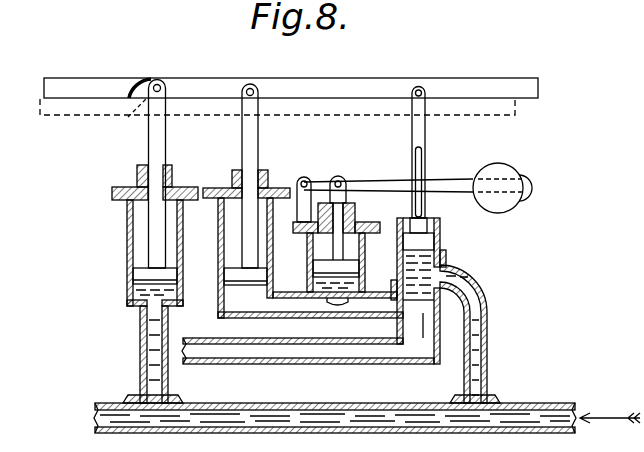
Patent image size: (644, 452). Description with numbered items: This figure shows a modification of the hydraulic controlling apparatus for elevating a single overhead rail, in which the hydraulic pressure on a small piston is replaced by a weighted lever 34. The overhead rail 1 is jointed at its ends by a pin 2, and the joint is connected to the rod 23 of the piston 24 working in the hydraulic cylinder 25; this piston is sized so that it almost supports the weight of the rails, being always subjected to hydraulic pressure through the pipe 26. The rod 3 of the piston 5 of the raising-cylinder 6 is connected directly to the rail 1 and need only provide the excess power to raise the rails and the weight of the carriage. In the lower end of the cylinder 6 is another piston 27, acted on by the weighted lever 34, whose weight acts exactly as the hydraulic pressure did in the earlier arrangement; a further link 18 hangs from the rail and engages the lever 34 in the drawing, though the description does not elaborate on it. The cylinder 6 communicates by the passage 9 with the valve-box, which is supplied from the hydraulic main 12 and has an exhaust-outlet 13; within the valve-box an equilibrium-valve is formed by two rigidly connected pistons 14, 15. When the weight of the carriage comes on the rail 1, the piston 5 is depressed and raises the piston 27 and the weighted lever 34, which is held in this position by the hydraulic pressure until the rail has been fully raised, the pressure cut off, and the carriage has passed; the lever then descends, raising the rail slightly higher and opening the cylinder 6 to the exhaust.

The overhead rail 1 is at (289, 97).
The pin 2 is at (163, 88).
The rod 3 is at (252, 137).
The piston 5 is at (246, 275).
The hydraulic cylinder 6 is at (234, 236).
The passage 9 is at (291, 307).
The hydraulic main 12 is at (343, 417).
The exhaust-outlet 13 is at (312, 357).
The piston 14 is at (422, 241).
The piston 15 is at (428, 305).
The slotted link 18 is at (423, 132).
The rod 23 is at (162, 136).
The piston 24 is at (152, 277).
The hydraulic cylinder 25 is at (146, 235).
The pipe 26 is at (136, 354).
The piston 27 is at (338, 271).
The weighted lever 34 is at (352, 184).